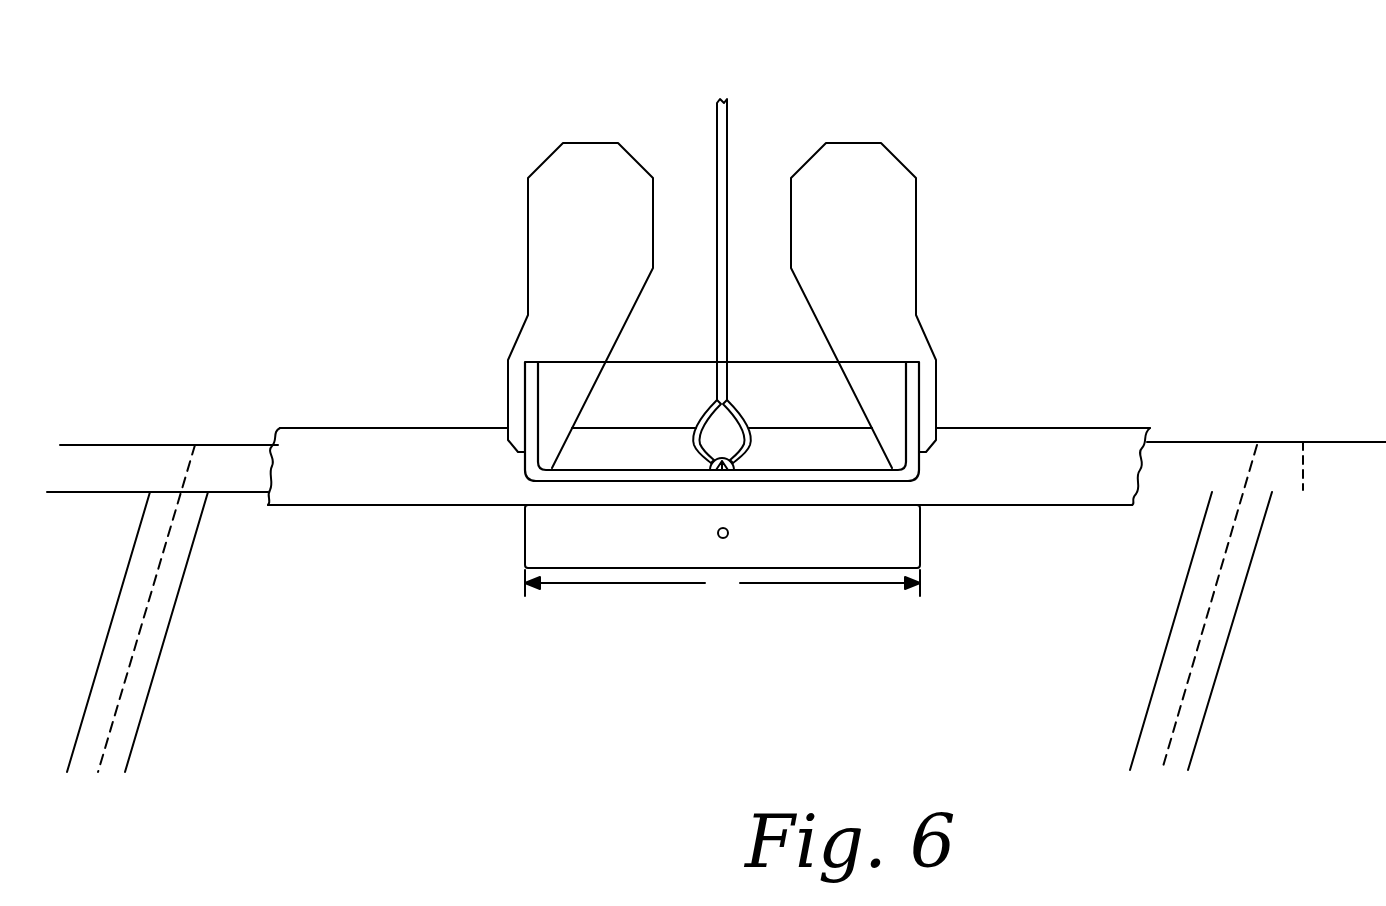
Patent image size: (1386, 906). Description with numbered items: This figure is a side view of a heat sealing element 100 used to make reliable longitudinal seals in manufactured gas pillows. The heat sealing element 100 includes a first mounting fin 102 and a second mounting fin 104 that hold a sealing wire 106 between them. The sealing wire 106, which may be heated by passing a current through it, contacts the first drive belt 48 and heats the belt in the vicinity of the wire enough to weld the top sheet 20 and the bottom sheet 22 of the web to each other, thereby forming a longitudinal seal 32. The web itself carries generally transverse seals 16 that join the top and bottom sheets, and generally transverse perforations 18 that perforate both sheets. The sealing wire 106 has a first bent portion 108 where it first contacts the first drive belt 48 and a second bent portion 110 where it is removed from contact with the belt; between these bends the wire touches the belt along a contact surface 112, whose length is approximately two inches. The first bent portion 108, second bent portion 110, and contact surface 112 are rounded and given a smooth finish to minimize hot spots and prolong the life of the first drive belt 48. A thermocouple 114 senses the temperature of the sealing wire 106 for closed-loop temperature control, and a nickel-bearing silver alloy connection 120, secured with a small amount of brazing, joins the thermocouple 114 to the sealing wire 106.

The transverse seals 16 is at (120, 698).
The transverse perforations 18 is at (173, 620).
The top sheet 20 is at (1349, 467).
The bottom sheet 22 is at (1303, 440).
The longitudinal seal 32 is at (88, 493).
The first drive belt 48 is at (1092, 440).
The heat sealing element 100 is at (480, 305).
The first mounting fin 102 is at (580, 305).
The second mounting fin 104 is at (863, 305).
The sealing wire 106 is at (660, 478).
The first bent portion 108 is at (915, 473).
The second bent portion 110 is at (527, 473).
The contact surface 112 is at (547, 483).
The thermocouple 114 is at (720, 103).
The connection 120 is at (735, 466).